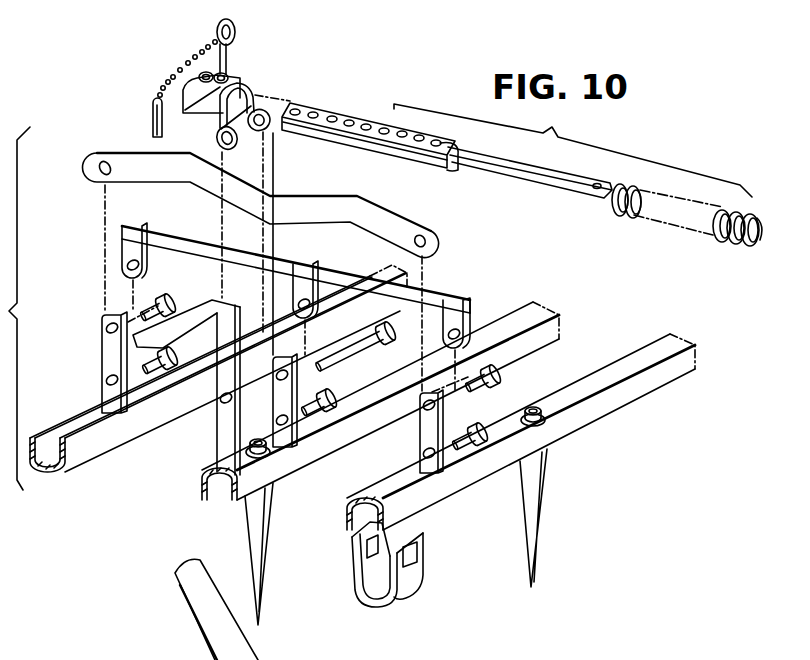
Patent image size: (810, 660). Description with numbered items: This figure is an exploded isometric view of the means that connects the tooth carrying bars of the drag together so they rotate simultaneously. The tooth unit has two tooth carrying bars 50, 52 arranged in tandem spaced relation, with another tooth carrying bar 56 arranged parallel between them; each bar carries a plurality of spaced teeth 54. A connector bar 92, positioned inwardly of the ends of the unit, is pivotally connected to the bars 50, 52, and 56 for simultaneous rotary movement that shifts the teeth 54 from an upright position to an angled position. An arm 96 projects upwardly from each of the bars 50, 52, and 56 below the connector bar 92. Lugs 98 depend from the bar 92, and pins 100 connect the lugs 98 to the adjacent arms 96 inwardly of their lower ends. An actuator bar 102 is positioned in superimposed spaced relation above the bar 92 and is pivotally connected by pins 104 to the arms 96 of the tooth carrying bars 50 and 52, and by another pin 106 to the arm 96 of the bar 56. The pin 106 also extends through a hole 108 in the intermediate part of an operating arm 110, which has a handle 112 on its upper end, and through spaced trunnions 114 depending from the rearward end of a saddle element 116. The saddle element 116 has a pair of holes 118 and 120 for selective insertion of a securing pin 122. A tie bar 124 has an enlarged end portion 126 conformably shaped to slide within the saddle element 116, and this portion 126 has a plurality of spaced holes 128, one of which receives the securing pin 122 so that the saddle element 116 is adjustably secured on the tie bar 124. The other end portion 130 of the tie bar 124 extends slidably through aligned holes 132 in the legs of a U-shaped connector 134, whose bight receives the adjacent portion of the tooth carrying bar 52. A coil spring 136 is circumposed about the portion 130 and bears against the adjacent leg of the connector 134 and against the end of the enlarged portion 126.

The tooth carrying bar 50 is at (93, 447).
The tooth carrying bar 52 is at (458, 486).
The teeth 54 is at (267, 518).
The tooth carrying bar 56 is at (322, 452).
The connector bar 92 is at (175, 243).
The arm 96 is at (112, 357).
The lugs 98 is at (133, 243).
The pins 100 is at (173, 362).
The actuator bar 102 is at (302, 205).
The pins 104 is at (155, 310).
The pin 106 is at (362, 340).
The hole 108 is at (218, 403).
The operating arm 110 is at (222, 433).
The handle 112 is at (193, 317).
The trunnions 114 is at (263, 110).
The saddle element 116 is at (245, 80).
The hole 118 is at (188, 66).
The hole 120 is at (240, 80).
The securing pin 122 is at (236, 42).
The tie bar 124 is at (458, 172).
The enlarged end portion 126 is at (377, 142).
The holes 128 is at (353, 120).
The end portion 130 is at (548, 190).
The holes 132 is at (420, 552).
The U-shaped connector 134 is at (418, 570).
The coil spring 136 is at (633, 218).